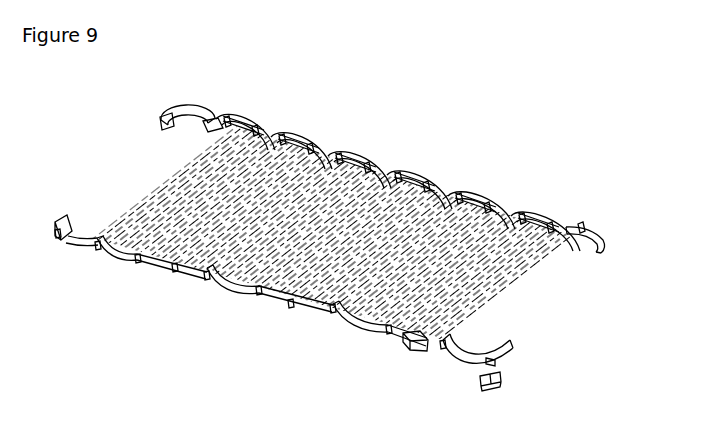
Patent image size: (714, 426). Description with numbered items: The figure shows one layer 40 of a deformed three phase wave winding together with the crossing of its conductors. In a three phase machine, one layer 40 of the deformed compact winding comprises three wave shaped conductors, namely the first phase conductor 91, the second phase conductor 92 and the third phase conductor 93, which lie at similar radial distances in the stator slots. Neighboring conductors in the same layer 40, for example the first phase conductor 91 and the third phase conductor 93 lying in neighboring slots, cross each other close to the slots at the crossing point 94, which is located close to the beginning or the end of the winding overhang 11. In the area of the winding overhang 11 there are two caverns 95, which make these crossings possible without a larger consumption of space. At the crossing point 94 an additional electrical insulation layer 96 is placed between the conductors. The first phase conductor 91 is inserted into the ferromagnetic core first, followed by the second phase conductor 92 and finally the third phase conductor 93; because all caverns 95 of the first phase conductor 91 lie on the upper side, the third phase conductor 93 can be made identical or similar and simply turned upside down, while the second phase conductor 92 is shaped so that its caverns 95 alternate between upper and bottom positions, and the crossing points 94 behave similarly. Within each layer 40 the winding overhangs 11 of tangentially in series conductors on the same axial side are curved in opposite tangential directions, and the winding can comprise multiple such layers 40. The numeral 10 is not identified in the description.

The layer 40 is at (157, 178).
The finned tube body 10 is at (186, 158).
The winding overhang 11 is at (457, 363).
The first phase conductor 91 is at (343, 321).
The second phase conductor 92 is at (298, 318).
The third phase conductor 93 is at (385, 333).
The crossing point 94 is at (367, 333).
The cavern 95 is at (491, 362).
The electrical insulation layer 96 is at (58, 238).